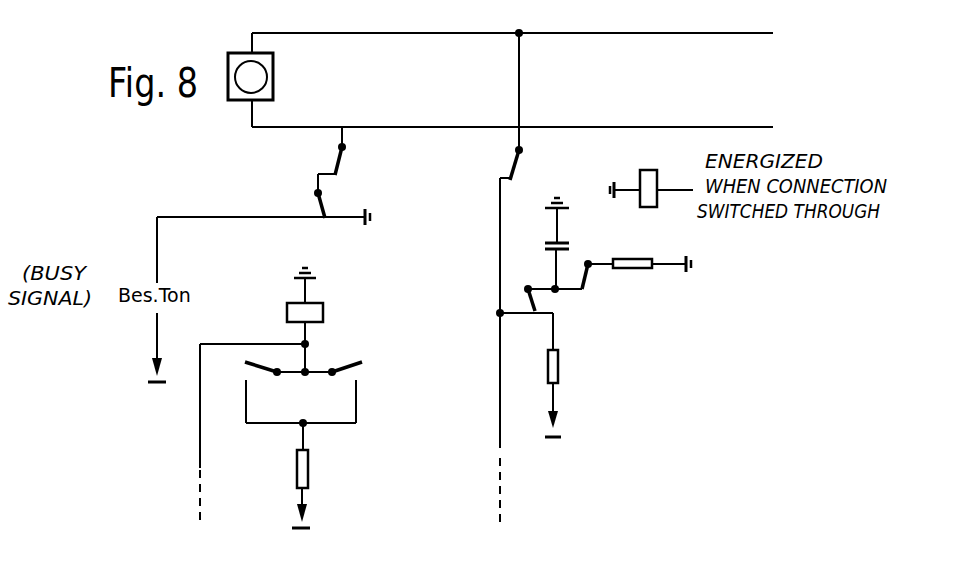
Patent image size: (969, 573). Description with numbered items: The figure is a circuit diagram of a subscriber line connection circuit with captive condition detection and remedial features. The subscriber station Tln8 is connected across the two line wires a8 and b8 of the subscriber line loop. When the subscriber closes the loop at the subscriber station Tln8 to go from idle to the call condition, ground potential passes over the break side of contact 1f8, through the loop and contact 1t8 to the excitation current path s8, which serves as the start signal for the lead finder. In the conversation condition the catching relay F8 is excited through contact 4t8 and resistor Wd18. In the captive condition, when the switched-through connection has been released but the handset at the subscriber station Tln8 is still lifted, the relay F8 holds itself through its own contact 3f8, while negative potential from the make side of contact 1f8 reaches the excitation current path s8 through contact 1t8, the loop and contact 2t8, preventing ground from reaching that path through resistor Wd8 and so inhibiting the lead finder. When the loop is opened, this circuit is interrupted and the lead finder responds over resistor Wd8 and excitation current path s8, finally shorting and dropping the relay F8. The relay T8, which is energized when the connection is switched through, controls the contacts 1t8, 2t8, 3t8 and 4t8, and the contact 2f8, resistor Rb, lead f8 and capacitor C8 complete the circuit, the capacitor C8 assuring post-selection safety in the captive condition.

The a-wire of subscriber line a8 is at (720, 33).
The b-wire of subscriber line b8 is at (720, 127).
The subscriber station Tln8 is at (270, 92).
The contact 1t8 is at (341, 158).
The contact 1f8 is at (322, 221).
The contact 2t8 is at (516, 160).
The relay energized when connection switched through T8 is at (650, 172).
The capacitor C8 is at (548, 241).
The resistor Wd8 is at (662, 249).
The third contact of relay T8 3t8 is at (584, 289).
The second contact of relay F8 2f8 is at (526, 316).
The resistor Rb is at (569, 381).
The catching relay F8 is at (320, 320).
The contact 4t8 is at (254, 366).
The contact 3f8 is at (358, 368).
The resistor Wd18 is at (323, 488).
The f-wire f8 is at (200, 428).
The excitation current path s8 is at (500, 432).